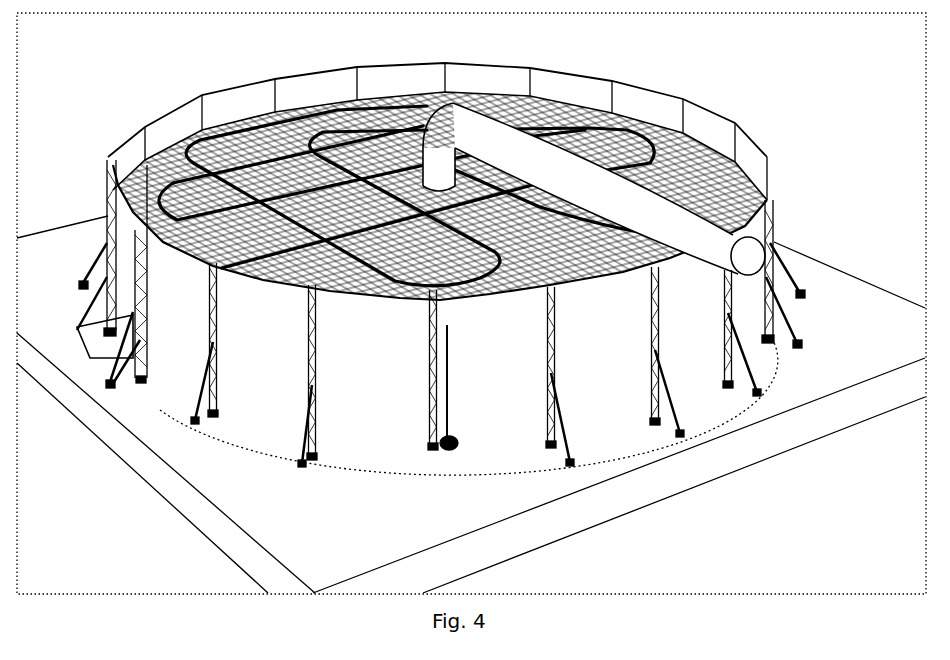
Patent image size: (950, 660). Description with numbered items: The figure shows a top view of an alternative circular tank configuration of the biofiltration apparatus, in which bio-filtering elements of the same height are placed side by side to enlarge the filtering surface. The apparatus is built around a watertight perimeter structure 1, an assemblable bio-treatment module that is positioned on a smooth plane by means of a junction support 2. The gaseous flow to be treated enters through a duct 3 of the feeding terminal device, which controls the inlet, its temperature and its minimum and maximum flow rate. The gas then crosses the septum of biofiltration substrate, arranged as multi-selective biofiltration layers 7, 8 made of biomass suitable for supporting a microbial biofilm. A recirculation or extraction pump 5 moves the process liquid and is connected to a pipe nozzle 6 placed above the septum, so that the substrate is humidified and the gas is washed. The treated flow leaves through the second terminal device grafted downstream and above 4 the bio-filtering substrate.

The watertight perimeter structure 1 is at (427, 304).
The junction support 2 is at (664, 333).
The duct 3 is at (94, 316).
The upper downstream connection 4 is at (433, 150).
The recirculation or extraction pump 5 is at (464, 426).
The pipe nozzle 6 is at (810, 383).
The multi-selective biofiltration layer 7 is at (230, 152).
The multi-selective biofiltration layer 8 is at (696, 104).